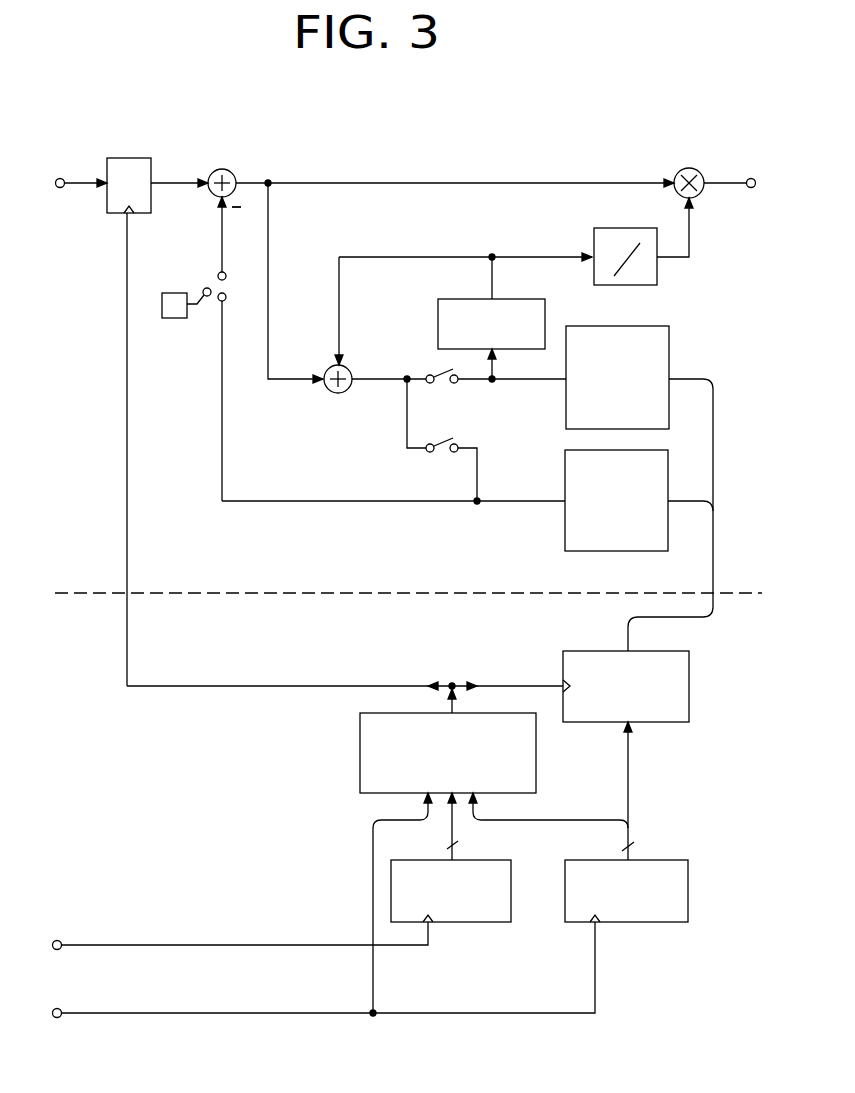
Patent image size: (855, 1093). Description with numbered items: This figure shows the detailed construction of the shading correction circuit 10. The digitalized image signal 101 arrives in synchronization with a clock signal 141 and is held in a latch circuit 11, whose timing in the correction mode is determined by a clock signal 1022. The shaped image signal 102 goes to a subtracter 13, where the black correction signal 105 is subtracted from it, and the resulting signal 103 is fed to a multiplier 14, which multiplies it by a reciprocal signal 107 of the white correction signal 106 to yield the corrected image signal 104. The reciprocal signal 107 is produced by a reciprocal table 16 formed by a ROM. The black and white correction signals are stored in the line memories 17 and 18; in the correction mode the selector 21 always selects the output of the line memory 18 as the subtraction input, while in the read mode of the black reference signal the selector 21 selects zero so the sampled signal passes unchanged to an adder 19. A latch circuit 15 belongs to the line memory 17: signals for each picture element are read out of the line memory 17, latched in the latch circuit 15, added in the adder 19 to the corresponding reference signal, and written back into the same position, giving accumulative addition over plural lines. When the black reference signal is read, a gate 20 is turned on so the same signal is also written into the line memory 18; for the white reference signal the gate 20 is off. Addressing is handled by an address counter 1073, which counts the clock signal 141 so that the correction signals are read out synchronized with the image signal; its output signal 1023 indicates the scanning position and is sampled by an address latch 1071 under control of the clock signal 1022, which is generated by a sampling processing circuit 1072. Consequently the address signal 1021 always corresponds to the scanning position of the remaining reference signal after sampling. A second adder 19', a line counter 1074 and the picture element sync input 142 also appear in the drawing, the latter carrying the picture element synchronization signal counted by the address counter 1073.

The shading correction circuit 10 is at (386, 121).
The latch circuit 11 is at (131, 158).
The subtracter 13 is at (233, 172).
The multiplier 14 is at (691, 168).
The latch circuit 15 is at (440, 299).
The reciprocal table 16 is at (620, 228).
The line memory 17 is at (669, 337).
The line memory 18 is at (565, 465).
The adder 19 is at (459, 356).
The adder 19' is at (310, 288).
The gate 20 is at (437, 440).
The selector 21 is at (232, 290).
The digitalized image signal 101 is at (88, 183).
The image signal 102 is at (170, 183).
The resulting signal 103 is at (500, 183).
The corrected image signal 104 is at (730, 183).
The black correction signal 105 is at (222, 239).
The white correction signal 106 is at (515, 257).
The reciprocal signal 107 is at (689, 240).
The address signal 1021 is at (714, 397).
The clock signal 1022 is at (407, 686).
The address counter output signal 1023 is at (628, 773).
The address latch 1071 is at (689, 678).
The sampling processing circuit 1072 is at (538, 755).
The address counter 1073 is at (663, 922).
The line counter 1074 is at (493, 922).
The clock signal 141 is at (305, 944).
The picture element sync signal input terminal 142 is at (110, 1014).